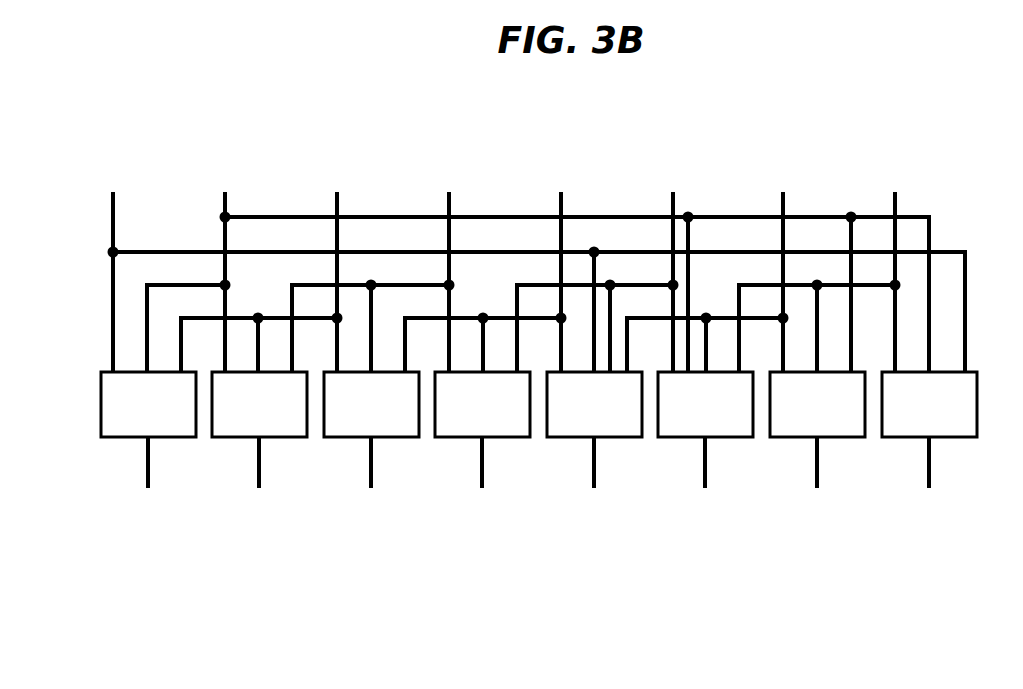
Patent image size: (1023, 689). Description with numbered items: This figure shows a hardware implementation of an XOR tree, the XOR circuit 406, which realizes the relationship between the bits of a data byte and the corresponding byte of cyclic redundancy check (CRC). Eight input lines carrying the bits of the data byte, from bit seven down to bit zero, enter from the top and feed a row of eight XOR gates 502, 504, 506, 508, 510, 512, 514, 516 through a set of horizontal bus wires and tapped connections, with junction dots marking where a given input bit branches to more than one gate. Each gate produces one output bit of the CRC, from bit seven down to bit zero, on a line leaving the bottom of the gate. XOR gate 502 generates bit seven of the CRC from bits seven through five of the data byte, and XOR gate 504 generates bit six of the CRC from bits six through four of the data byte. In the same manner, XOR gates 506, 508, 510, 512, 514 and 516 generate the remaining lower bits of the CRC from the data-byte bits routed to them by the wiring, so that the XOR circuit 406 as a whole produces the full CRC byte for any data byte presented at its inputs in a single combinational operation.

The XOR circuit 406 is at (787, 550).
The XOR gate 502 is at (118, 439).
The XOR gate 504 is at (230, 439).
The XOR gate 506 is at (342, 439).
The XOR gate 508 is at (453, 439).
The XOR gate 510 is at (565, 439).
The XOR gate 512 is at (677, 439).
The XOR gate 514 is at (789, 439).
The XOR gate 516 is at (901, 439).